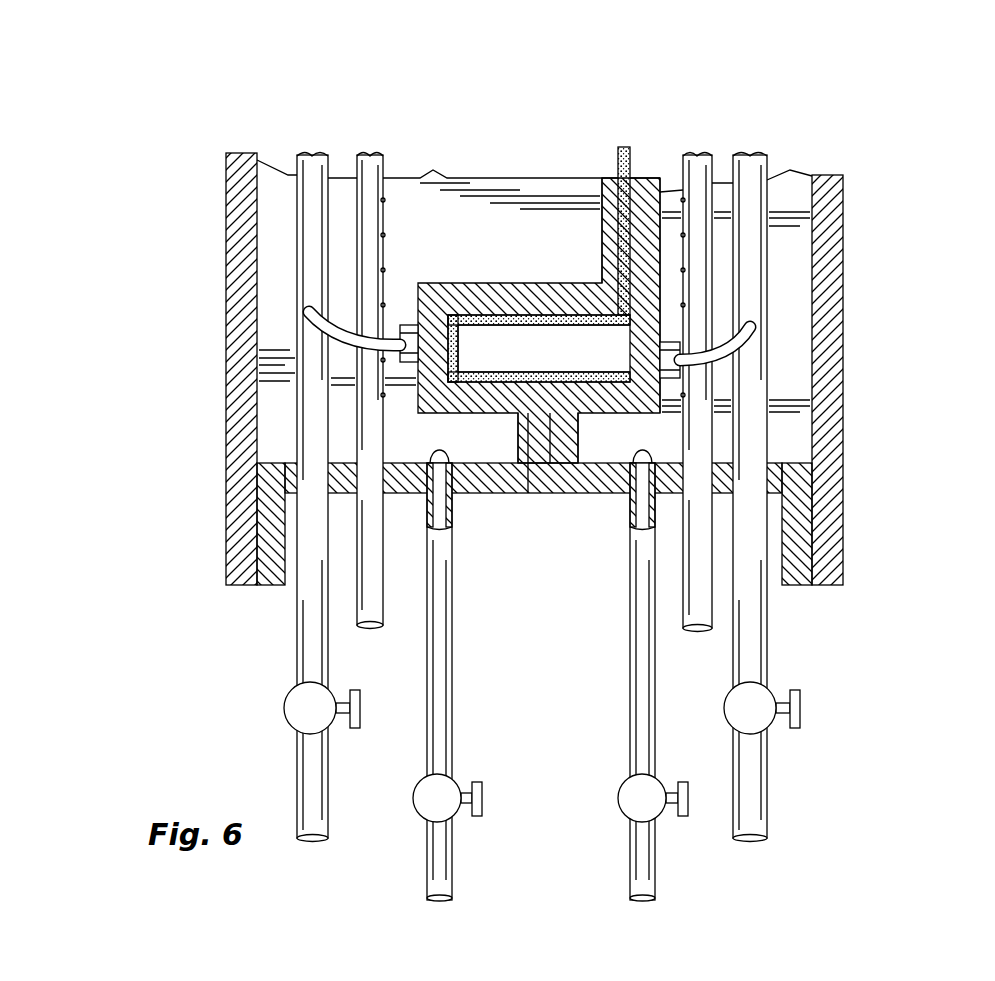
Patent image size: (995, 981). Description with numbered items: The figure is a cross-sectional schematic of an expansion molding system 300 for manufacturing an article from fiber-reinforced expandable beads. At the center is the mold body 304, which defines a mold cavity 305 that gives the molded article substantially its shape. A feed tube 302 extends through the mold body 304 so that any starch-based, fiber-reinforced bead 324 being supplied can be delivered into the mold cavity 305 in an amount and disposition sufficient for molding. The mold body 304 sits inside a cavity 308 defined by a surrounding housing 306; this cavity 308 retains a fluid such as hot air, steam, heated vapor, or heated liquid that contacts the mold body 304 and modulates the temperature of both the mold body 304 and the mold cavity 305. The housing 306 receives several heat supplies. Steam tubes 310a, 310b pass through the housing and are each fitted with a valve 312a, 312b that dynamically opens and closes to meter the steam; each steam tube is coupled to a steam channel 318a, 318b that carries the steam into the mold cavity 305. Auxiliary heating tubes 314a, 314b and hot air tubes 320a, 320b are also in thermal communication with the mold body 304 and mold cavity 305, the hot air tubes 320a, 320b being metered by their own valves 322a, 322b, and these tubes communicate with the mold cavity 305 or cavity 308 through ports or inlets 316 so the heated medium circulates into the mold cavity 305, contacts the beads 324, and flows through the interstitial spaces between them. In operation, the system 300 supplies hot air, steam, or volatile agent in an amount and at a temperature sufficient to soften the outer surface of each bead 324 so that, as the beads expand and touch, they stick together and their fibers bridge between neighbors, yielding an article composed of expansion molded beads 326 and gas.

The expansion molding system 300 is at (851, 651).
The feed tube 302 is at (613, 176).
The mold body 304 is at (497, 290).
The mold cavity 305 is at (549, 313).
The housing 306 is at (227, 153).
The cavity 308 is at (432, 212).
The steam tube 310a is at (750, 253).
The steam tube 310b is at (295, 225).
The valve 312a is at (800, 705).
The valve 312b is at (362, 706).
The auxiliary heating tube 314a is at (715, 305).
The auxiliary heating tube 314b is at (357, 260).
The ports or inlets 316 is at (382, 193).
The steam channel 318a is at (753, 351).
The steam channel 318b is at (352, 343).
The hot air tube 320a is at (629, 697).
The hot air tube 320b is at (451, 645).
The valve 322a is at (689, 800).
The valve 322b is at (484, 800).
The bead 324 is at (627, 145).
The expansion molded beads 326 is at (528, 493).